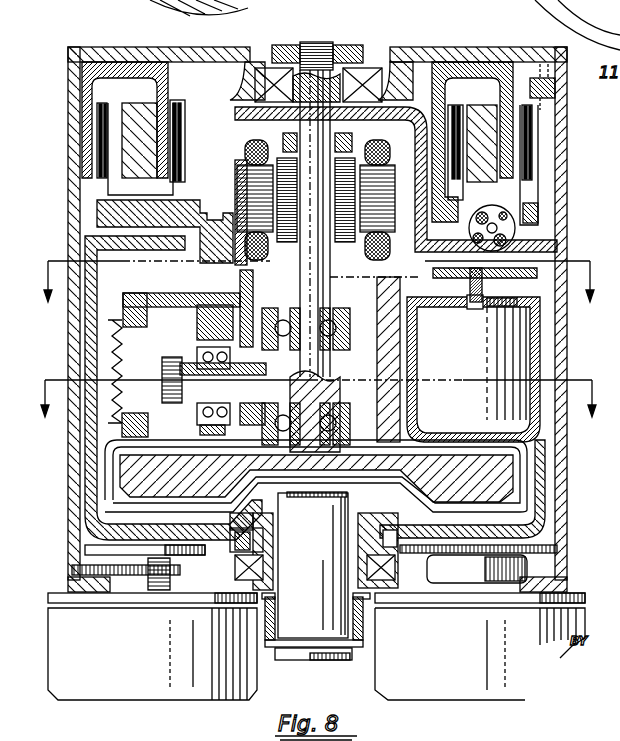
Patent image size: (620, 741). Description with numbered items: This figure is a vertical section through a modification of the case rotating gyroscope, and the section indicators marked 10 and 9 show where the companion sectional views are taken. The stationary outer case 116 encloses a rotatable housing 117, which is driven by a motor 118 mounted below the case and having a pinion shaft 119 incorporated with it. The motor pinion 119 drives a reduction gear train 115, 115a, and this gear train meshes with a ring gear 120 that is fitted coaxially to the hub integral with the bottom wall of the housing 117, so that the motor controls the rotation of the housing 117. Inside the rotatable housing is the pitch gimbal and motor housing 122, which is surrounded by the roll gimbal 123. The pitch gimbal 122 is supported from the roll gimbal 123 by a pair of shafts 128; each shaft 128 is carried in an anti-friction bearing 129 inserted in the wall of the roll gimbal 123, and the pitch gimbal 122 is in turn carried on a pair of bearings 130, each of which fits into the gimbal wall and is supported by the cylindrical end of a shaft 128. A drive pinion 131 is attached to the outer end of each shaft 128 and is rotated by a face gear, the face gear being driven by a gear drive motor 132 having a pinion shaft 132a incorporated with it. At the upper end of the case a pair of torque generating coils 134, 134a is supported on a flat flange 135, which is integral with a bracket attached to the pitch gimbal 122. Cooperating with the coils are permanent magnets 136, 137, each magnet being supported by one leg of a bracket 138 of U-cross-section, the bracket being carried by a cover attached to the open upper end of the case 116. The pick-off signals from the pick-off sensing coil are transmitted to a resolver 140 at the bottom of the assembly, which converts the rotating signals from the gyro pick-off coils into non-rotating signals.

The outer case 116 is at (168, 48).
The bracket of U-cross-section 138 is at (112, 62).
The permanent magnet 136 is at (146, 108).
The permanent magnet 137 is at (472, 105).
The torque generating coil 134 is at (180, 137).
The torque generating coil 134a is at (100, 118).
The flat flange 135 is at (176, 203).
The rotatable housing 117 is at (413, 115).
The pitch gimbal and motor housing 122 is at (238, 163).
The roll gimbal 123 is at (158, 305).
The shaft 128 is at (197, 420).
The anti-friction bearing 129 is at (217, 427).
The bearing 130 is at (242, 413).
The drive pinion 131 is at (168, 408).
The gear drive motor 132 is at (492, 345).
The pinion shaft 132a is at (468, 288).
The ring gear 120 is at (243, 532).
The reduction gear train 115 is at (73, 562).
The reduction gear train 115a is at (550, 558).
The pinion shaft 119 is at (162, 590).
The motor 118 is at (205, 683).
The resolver 140 is at (507, 573).
The section line 10- 10 is at (317, 270).
The section line 9- 9 is at (316, 409).